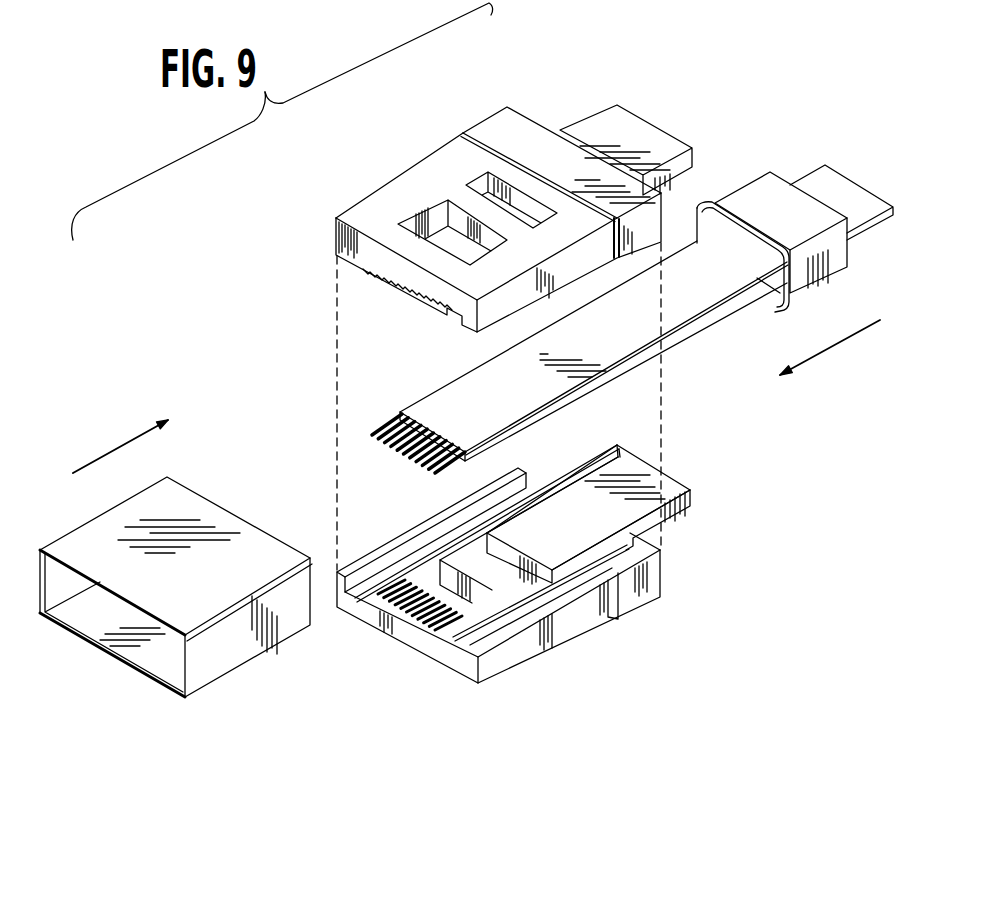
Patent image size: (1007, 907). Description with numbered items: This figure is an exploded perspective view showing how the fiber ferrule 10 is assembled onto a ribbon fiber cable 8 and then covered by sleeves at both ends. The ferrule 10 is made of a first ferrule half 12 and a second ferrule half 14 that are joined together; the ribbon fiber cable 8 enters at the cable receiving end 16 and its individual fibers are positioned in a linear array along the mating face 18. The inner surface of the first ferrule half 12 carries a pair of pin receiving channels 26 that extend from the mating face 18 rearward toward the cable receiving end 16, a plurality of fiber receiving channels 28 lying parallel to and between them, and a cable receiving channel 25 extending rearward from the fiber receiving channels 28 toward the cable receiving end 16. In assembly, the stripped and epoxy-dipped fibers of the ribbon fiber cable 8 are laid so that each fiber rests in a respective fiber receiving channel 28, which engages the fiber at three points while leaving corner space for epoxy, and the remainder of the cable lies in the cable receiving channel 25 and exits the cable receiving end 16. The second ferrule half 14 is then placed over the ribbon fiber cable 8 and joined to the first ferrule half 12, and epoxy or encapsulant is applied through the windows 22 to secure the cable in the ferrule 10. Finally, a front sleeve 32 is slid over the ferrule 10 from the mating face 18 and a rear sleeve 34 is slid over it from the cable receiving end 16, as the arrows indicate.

The ribbon fiber cable 8 is at (804, 174).
The ferrule 10 is at (560, 127).
The first ferrule half 12 is at (688, 500).
The second ferrule half 14 is at (374, 197).
The cable receiving end 16 is at (662, 482).
The mating face 18 is at (335, 245).
The windows 22 is at (441, 214).
The cable receiving channel 25 is at (573, 539).
The pin receiving channels 26 is at (362, 594).
The fiber receiving channels 28 is at (435, 630).
The front sleeve 32 is at (215, 645).
The rear sleeve 34 is at (750, 192).